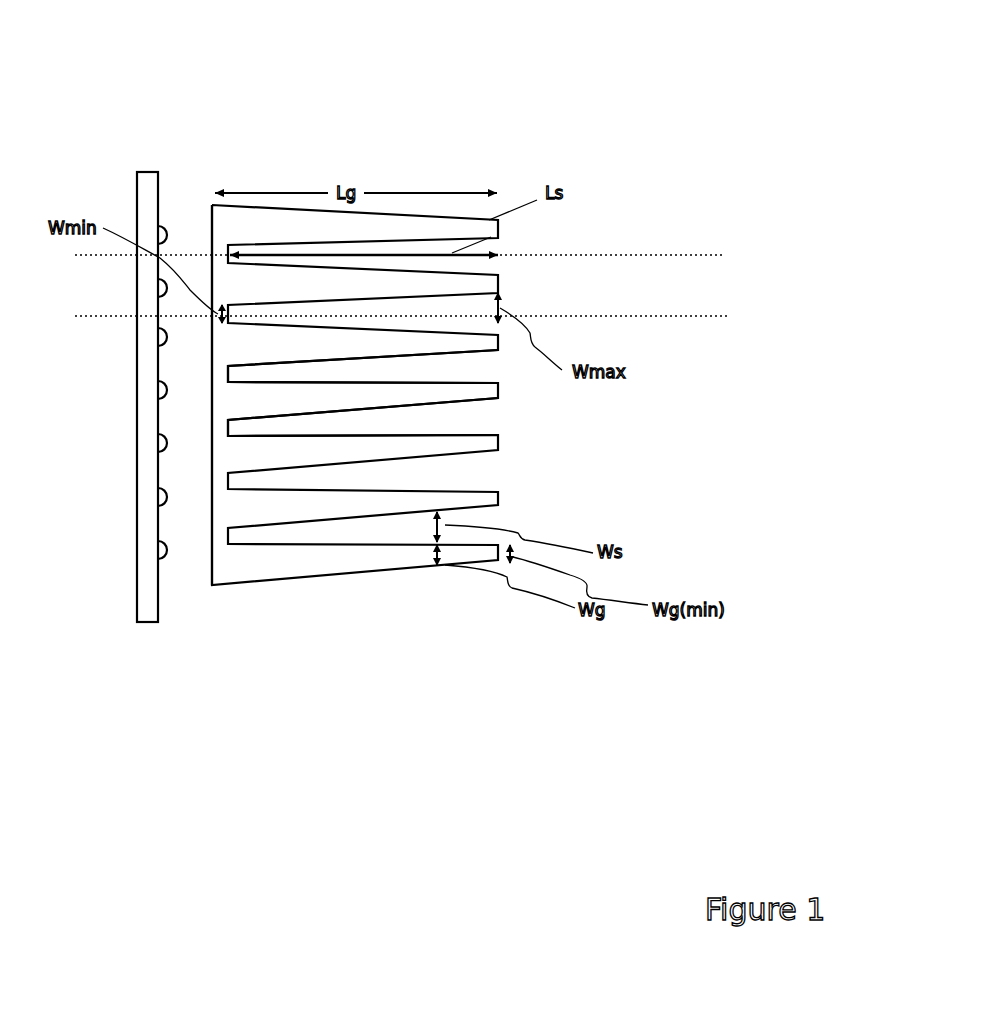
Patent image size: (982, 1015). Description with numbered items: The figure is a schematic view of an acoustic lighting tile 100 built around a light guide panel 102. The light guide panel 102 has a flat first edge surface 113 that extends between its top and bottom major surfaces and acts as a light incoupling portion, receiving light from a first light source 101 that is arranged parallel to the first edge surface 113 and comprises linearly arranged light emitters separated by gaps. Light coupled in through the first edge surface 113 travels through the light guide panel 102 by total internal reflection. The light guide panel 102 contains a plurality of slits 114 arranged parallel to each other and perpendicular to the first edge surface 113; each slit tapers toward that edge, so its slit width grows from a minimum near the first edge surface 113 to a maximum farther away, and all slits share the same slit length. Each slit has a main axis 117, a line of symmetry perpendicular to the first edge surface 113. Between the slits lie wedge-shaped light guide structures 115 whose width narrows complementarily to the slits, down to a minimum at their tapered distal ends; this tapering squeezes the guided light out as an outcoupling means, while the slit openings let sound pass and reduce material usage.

The acoustic lighting tile 100 is at (512, 100).
The first light source 101 is at (145, 183).
The light guide panel 102 is at (292, 567).
The first edge surface 113 is at (210, 218).
The plurality of slits 114 is at (497, 420).
The plurality of light guide structures 115 is at (411, 382).
The main axis 117 is at (557, 255).